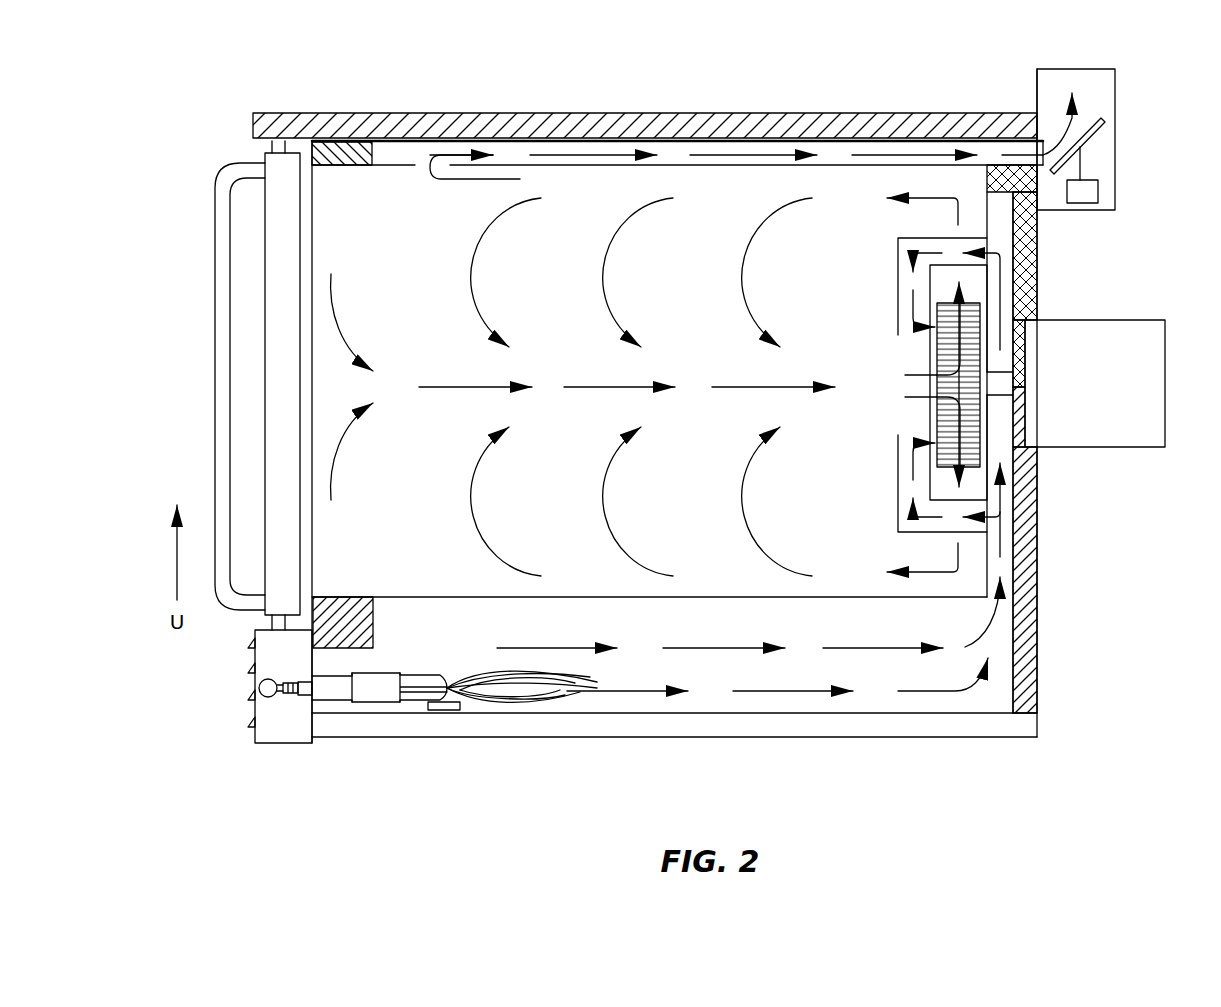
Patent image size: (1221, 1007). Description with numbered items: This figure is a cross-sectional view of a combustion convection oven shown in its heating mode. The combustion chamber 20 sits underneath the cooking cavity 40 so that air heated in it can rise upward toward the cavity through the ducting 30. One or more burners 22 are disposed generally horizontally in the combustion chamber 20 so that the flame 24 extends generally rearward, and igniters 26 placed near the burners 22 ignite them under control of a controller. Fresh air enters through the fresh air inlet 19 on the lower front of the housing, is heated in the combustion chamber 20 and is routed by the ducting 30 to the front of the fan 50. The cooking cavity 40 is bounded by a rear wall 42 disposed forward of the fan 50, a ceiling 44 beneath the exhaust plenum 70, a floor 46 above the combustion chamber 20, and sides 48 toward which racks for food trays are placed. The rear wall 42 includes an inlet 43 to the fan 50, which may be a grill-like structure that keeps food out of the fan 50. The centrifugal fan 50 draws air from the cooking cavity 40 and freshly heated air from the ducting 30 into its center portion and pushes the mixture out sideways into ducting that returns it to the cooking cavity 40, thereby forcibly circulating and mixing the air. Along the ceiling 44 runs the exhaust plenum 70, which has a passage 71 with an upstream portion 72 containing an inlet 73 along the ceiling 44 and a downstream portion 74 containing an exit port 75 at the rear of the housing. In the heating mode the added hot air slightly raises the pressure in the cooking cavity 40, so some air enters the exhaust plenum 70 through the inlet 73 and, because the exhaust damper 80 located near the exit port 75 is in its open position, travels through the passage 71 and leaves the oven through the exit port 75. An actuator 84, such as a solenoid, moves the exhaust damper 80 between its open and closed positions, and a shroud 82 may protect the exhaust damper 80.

The fresh air inlet 19 is at (250, 717).
The combustion chamber 20 is at (708, 692).
The burner 22 is at (377, 690).
The flame 24 is at (502, 700).
The igniter 26 is at (443, 707).
The ducting 30 is at (1002, 568).
The cooking cavity 40 is at (378, 221).
The rear wall 42 is at (898, 285).
The inlet 43 is at (895, 355).
The ceiling 44 is at (715, 165).
The floor 46 is at (417, 597).
The sides 48 is at (573, 442).
The fan 50 is at (972, 412).
The exhaust plenum 70 is at (673, 157).
The passage 71 is at (517, 155).
The upstream portion 72 is at (500, 150).
The inlet 73 is at (422, 160).
The downstream portion 74 is at (990, 155).
The exit port 75 is at (1052, 137).
The exhaust damper 80 is at (1092, 140).
The shroud 82 is at (1115, 92).
The actuator 84 is at (1085, 194).